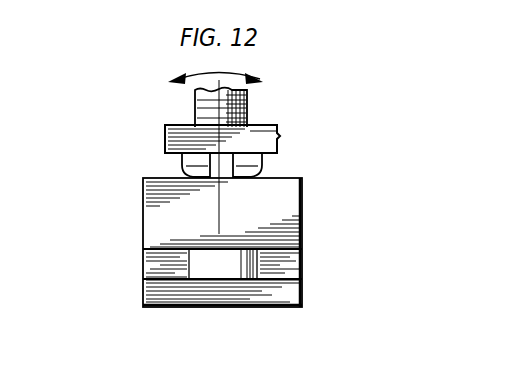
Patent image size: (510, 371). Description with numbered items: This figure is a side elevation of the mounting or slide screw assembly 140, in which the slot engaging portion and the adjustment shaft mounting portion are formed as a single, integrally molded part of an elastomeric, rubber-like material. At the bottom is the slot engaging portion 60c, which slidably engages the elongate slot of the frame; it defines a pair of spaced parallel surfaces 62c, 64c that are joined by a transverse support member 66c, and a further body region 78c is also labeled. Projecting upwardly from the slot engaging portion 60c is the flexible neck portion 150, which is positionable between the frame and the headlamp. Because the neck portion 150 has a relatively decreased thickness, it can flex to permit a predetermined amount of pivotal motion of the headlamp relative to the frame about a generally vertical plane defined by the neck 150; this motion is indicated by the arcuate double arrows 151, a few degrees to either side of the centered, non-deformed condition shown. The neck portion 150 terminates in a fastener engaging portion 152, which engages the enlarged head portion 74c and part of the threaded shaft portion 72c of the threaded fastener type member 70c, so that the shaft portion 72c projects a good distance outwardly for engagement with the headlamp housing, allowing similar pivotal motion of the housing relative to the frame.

The slide screw assembly 140 is at (116, 193).
The arcuate double arrows 151 is at (233, 74).
The threaded fastener type member 70c is at (195, 92).
The threaded shaft portion 72c is at (166, 128).
The fastener engaging portion 152 is at (268, 137).
The flexible neck portion 150 is at (183, 174).
The enlarged head portion 74c is at (262, 164).
The slot engaging portion 60c is at (308, 311).
The upper body portion 78c is at (286, 204).
The spaced parallel surface 62c is at (292, 257).
The transverse support member 66c is at (155, 263).
The spaced parallel surface 64c is at (287, 279).